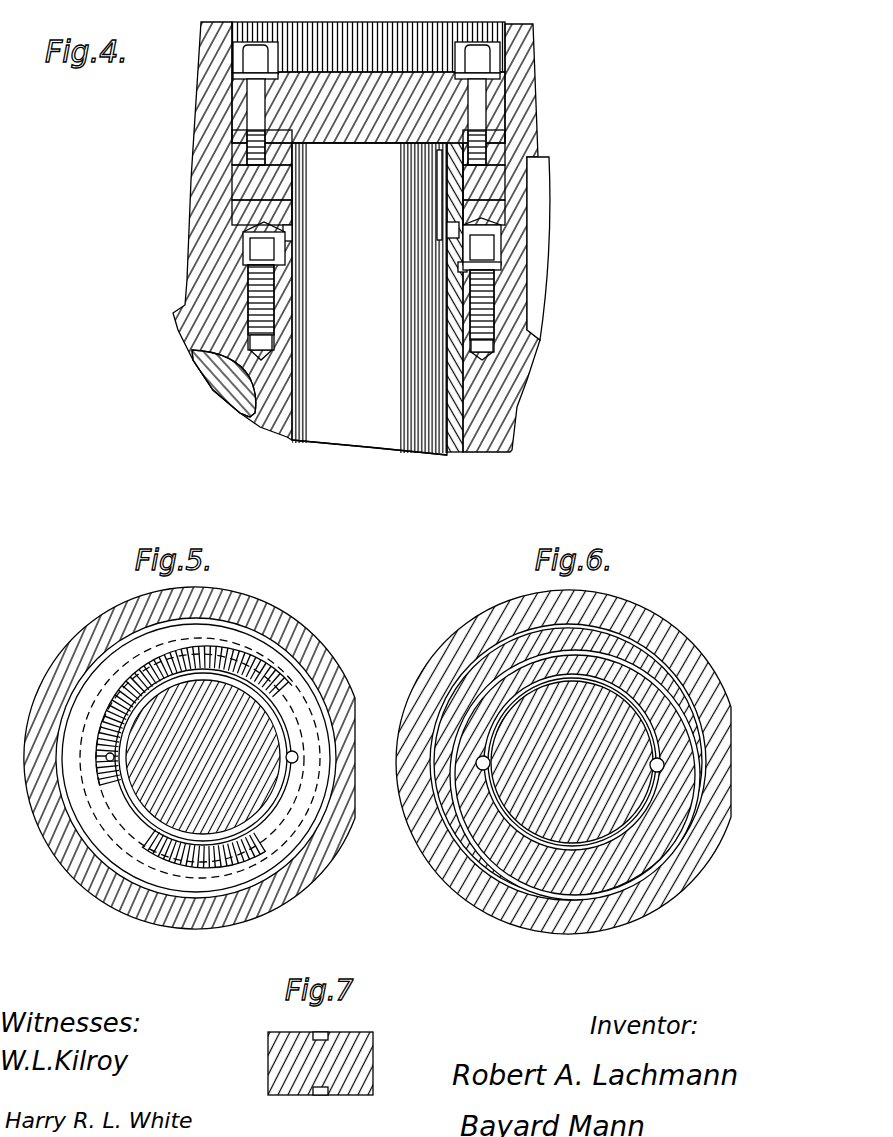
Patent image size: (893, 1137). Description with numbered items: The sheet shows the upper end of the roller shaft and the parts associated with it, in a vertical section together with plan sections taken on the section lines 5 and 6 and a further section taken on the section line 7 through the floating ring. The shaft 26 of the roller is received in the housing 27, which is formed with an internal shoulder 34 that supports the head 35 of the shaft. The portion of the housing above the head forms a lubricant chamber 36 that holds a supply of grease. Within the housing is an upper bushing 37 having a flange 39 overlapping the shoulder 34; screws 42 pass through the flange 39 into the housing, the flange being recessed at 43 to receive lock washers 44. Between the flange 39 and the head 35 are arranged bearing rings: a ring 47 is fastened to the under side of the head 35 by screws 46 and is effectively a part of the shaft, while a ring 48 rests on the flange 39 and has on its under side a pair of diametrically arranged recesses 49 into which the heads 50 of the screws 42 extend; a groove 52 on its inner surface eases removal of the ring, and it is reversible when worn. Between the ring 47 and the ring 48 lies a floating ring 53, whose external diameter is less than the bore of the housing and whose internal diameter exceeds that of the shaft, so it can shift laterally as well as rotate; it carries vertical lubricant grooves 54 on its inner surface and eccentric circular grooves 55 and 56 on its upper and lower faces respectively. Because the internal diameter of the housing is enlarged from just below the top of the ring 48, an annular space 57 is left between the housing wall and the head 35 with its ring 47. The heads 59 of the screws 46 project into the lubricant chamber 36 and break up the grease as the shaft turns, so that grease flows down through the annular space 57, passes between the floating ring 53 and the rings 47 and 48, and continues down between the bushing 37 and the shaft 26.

In FIG. 4, the section line 5— 5 is at (165, 180).
In FIG. 4, the section line 6— 6 is at (160, 214).
In FIG. 5, the section line 7— 7 is at (207, 629).
In FIG. 4, the shaft 26 is at (368, 405).
In FIG. 5, the shaft 26 is at (153, 778).
In FIG. 6, the shaft 26 is at (528, 797).
In FIG. 4, the housing 27 is at (500, 438).
In FIG. 5, the housing 27 is at (96, 625).
In FIG. 6, the housing 27 is at (506, 602).
In FIG. 4, the internal shoulder 34 is at (494, 264).
In FIG. 4, the head 35 is at (372, 88).
In FIG. 4, the lubricant chamber 36 is at (322, 40).
In FIG. 4, the upper bushing 37 is at (460, 400).
In FIG. 4, the flange 39 is at (502, 272).
In FIG. 4, the screws 42 is at (490, 312).
In FIG. 4, the recess 43 is at (498, 264).
In FIG. 4, the lock washers 44 is at (460, 266).
In FIG. 4, the screws 46 is at (478, 90).
In FIG. 4, the ring 47 is at (498, 140).
In FIG. 4, the ring 48 is at (237, 210).
In FIG. 4, the recesses 49 is at (262, 246).
In FIG. 4, the heads 50 is at (258, 268).
In FIG. 4, the groove 52 is at (285, 232).
In FIG. 4, the floating ring 53 is at (268, 184).
In FIG. 5, the floating ring 53 is at (100, 835).
In FIG. 6, the floating ring 53 is at (516, 898).
In FIG. 7, the floating ring 53 is at (365, 1080).
In FIG. 4, the lubricant grooves 54 is at (437, 188).
In FIG. 5, the lubricant grooves 54 is at (107, 755).
In FIG. 6, the lubricant grooves 54 is at (478, 770).
In FIG. 4, the eccentric circular groove 55 is at (447, 236).
In FIG. 5, the eccentric circular groove 55 is at (268, 656).
In FIG. 7, the eccentric circular groove 55 is at (325, 1033).
In FIG. 5, the eccentric circular groove 56 is at (170, 868).
In FIG. 6, the eccentric circular groove 56 is at (500, 650).
In FIG. 7, the eccentric circular groove 56 is at (324, 1096).
In FIG. 4, the annular space 57 is at (250, 140).
In FIG. 4, the heads 59 is at (479, 50).